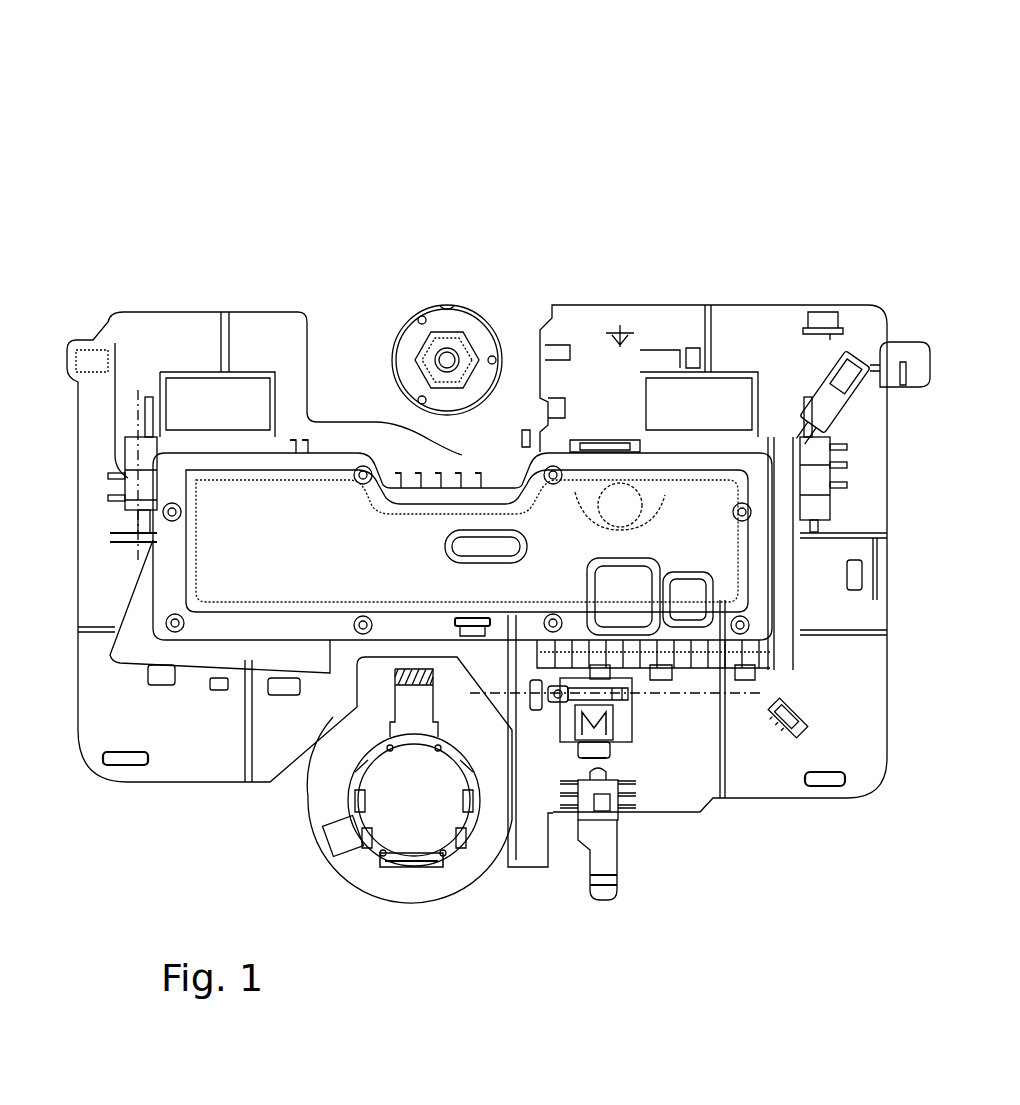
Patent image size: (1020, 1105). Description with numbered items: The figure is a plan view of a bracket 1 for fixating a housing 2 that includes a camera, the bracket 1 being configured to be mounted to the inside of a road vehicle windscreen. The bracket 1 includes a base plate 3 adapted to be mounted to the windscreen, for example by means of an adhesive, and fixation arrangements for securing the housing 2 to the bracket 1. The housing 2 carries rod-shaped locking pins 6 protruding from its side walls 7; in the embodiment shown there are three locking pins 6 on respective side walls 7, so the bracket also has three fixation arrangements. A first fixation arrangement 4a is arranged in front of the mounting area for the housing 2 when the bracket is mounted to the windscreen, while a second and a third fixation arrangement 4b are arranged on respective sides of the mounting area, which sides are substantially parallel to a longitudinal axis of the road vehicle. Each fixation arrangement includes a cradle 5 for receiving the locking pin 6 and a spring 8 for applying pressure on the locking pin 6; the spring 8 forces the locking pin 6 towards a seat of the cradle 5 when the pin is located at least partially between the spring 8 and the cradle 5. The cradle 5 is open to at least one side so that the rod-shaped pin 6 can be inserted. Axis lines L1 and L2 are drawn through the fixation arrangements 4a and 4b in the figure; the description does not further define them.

The bracket 1 is at (648, 121).
The housing 2 is at (405, 573).
The base plate 3 is at (173, 330).
The first fixation arrangement 4a is at (641, 752).
The second and third fixation arrangements 4b is at (116, 462).
The cradle 5 is at (612, 718).
The locking pin 6 is at (588, 690).
The side wall 7 is at (498, 620).
The spring 8 is at (607, 695).
The axis line L1 is at (483, 693).
The axis line L2 is at (137, 396).